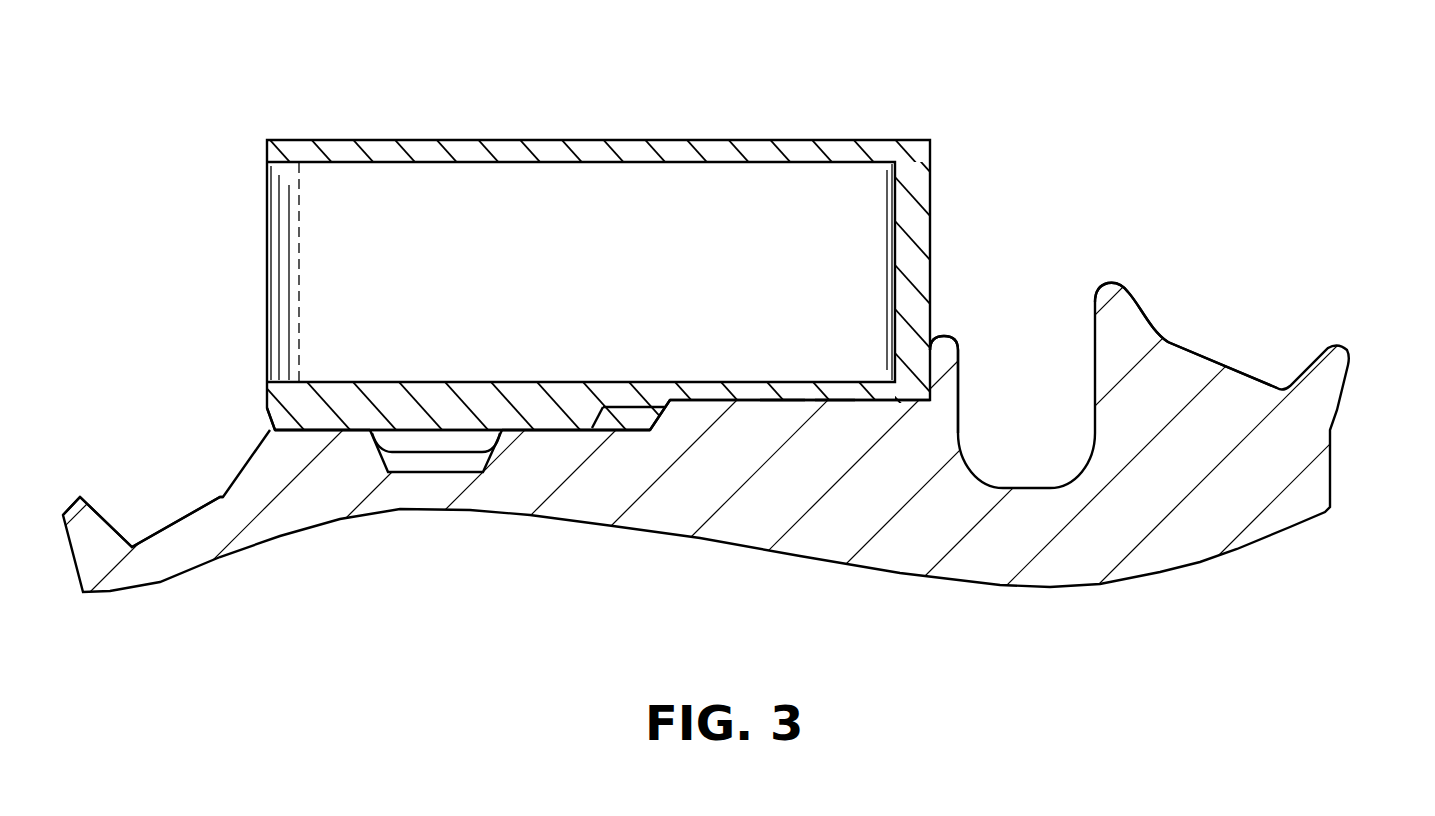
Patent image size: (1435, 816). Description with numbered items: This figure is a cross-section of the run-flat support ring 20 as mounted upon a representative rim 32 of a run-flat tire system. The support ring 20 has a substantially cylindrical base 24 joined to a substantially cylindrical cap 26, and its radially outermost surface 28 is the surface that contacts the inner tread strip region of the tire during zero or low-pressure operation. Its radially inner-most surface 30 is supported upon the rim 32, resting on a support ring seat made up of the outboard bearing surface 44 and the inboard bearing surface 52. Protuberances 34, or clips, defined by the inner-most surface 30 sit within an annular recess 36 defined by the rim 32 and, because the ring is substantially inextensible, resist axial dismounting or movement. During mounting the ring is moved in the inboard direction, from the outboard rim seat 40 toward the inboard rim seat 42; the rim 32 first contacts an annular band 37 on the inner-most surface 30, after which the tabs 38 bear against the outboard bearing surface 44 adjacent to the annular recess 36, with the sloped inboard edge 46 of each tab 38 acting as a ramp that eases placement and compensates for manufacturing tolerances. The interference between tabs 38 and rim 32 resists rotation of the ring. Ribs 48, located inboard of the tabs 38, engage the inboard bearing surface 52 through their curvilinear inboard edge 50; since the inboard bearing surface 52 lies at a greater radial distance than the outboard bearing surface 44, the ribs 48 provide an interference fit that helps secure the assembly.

The run-flat support ring 20 is at (892, 115).
The base 24 is at (293, 398).
The cap 26 is at (380, 140).
The radially outermost surface 28 is at (532, 140).
The radially inner-most surface 30 is at (863, 403).
The rim 32 is at (1293, 452).
The protuberance 34 is at (436, 441).
The annular recess 36 is at (440, 477).
The annular band 37 is at (647, 402).
The tab 38 is at (578, 415).
The outboard rim seat 40 is at (197, 502).
The inboard rim seat 42 is at (1200, 355).
The outboard bearing surface 44 is at (341, 432).
The inboard edge of tab 46 is at (608, 417).
The rib 48 is at (713, 393).
The inboard edge of rib 50 is at (833, 403).
The inboard bearing surface 52 is at (780, 403).